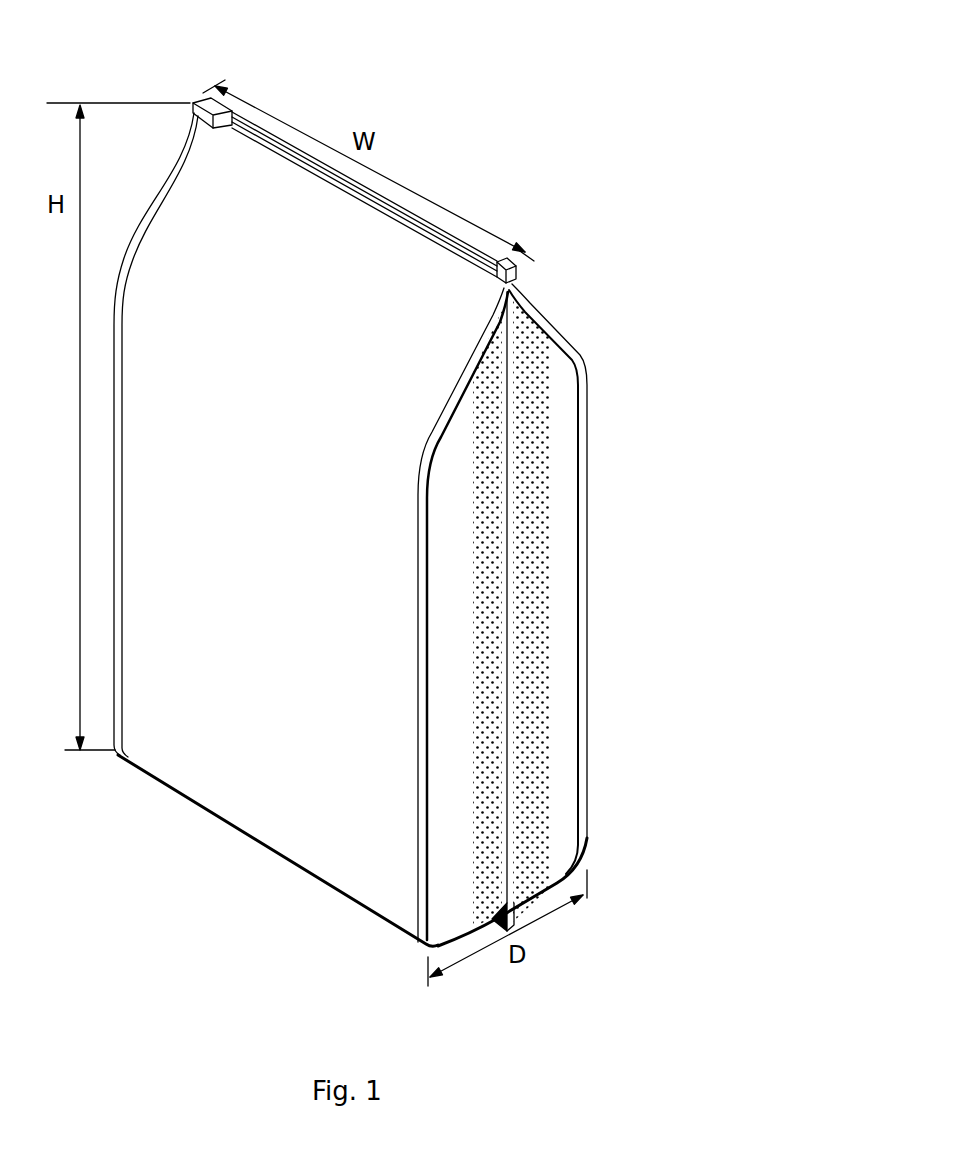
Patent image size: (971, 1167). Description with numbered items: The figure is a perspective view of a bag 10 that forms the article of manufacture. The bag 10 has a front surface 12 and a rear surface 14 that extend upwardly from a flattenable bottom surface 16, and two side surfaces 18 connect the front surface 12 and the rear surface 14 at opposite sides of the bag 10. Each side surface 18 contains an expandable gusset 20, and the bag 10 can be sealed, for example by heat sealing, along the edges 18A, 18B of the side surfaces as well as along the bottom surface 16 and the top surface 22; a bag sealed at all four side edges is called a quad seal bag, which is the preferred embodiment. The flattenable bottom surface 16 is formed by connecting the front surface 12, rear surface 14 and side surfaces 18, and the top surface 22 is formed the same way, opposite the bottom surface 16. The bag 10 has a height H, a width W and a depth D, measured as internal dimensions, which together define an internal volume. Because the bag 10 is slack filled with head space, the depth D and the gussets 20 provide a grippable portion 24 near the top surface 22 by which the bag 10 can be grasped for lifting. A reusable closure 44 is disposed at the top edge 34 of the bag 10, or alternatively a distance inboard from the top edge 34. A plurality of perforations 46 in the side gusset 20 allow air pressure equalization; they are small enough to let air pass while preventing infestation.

The bag 10 is at (635, 352).
The front surface 12 is at (318, 842).
The rear surface 14 is at (592, 547).
The flattenable bottom surface 16 is at (557, 867).
The side surface 18 is at (565, 683).
The side surface edge 18A is at (113, 750).
The side surface edge 18B is at (582, 758).
The expandable gusset 20 is at (507, 777).
The top surface 22 is at (515, 282).
The grippable portion 24 is at (512, 333).
The top edge 34 is at (195, 100).
The reusable closure 44 is at (481, 253).
The perforations 46 is at (528, 434).